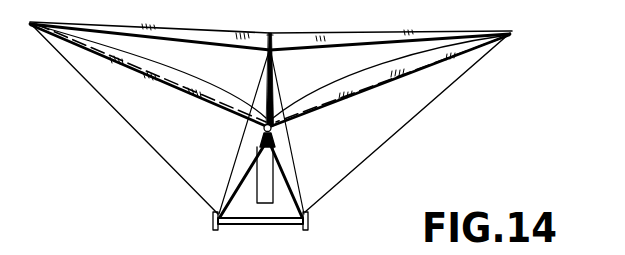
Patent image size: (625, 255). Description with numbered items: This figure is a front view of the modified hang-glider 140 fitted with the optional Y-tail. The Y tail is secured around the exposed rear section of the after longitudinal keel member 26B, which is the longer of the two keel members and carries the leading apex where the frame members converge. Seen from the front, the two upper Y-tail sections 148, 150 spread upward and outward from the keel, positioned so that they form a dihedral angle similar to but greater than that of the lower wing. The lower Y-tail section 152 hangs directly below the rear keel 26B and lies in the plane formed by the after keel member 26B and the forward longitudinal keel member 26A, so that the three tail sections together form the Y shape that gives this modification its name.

The forward longitudinal keel member 26A is at (272, 68).
The after longitudinal keel member 26B is at (261, 129).
The modified hang-glider 140 is at (362, 125).
The upper Y-tail section 148 is at (297, 107).
The upper Y-tail section 150 is at (215, 98).
The lower Y-tail section 152 is at (254, 198).